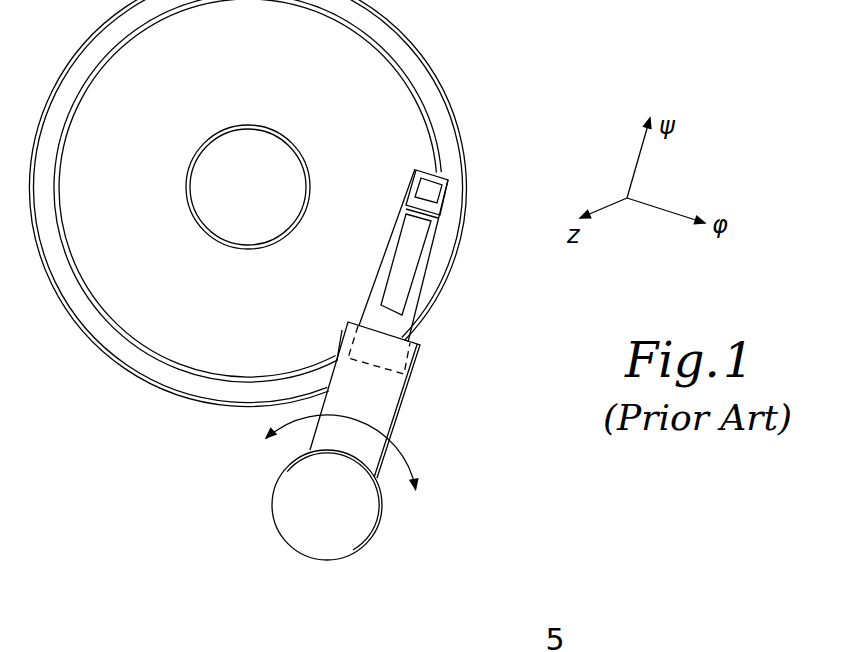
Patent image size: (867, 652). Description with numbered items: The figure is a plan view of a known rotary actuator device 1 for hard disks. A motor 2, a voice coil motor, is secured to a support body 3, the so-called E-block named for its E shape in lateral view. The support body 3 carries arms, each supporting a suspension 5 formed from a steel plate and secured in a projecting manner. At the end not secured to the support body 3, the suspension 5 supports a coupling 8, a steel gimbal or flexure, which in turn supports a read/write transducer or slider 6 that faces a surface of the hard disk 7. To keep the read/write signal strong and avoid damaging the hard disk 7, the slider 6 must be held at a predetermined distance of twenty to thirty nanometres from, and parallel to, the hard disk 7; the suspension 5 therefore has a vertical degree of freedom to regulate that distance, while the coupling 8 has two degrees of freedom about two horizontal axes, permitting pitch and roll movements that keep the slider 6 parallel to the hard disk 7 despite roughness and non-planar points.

The actuator device 1 is at (458, 426).
The motor 2 is at (357, 512).
The support body 3 is at (418, 392).
The suspension 5 is at (398, 325).
The read/write transducer 6 is at (447, 175).
The hard disk 7 is at (440, 107).
The coupling 8 is at (455, 198).